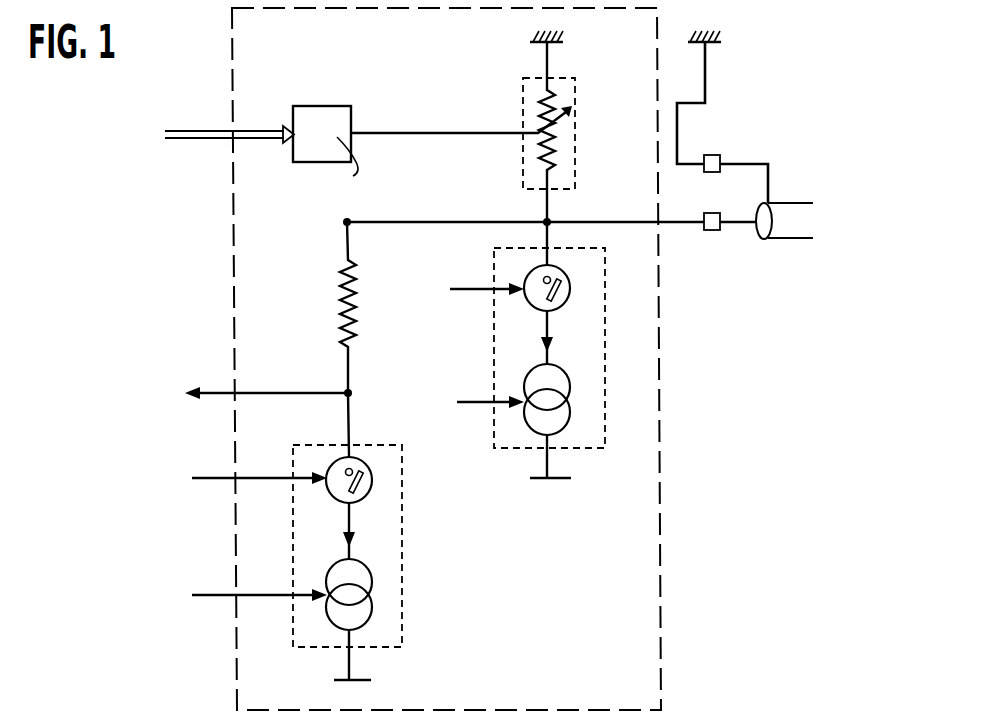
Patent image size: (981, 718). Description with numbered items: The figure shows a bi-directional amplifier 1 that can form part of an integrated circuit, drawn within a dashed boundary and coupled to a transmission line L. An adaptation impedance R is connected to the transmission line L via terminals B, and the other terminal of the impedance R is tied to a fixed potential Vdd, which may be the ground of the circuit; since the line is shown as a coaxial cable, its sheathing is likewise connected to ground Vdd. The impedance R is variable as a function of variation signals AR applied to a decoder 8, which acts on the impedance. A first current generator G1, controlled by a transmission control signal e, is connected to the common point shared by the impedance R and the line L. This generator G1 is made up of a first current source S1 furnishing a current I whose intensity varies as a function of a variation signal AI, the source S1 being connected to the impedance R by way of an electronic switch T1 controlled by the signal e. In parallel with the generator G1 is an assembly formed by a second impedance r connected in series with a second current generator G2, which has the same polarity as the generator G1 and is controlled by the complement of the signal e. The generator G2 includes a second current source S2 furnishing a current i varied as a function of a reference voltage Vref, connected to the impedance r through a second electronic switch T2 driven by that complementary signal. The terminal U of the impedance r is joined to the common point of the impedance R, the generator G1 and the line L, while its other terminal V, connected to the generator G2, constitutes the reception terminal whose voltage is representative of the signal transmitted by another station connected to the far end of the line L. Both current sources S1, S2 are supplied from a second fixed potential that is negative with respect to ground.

The bi-directional amplifier 1 is at (232, 245).
The decoder 8 is at (327, 105).
The variation signals AR is at (197, 130).
The adaptation impedance R is at (523, 97).
The second impedance r is at (341, 304).
The other terminal of the impedance r U is at (347, 216).
The reception terminal V is at (346, 386).
The electronic switch T1 is at (570, 290).
The second electronic switch T2 is at (371, 466).
The first current generator G1 is at (539, 362).
The second current generator G2 is at (309, 548).
The first current source S1 is at (572, 418).
The second current source S2 is at (372, 607).
The terminals B is at (718, 209).
The transmission line L is at (746, 240).
The current I is at (554, 337).
The current i is at (359, 531).
The transmission control signal e is at (475, 276).
The variation signal AI is at (476, 389).
The reference voltage Vref is at (242, 582).
The fixed potential Vdd is at (628, 39).